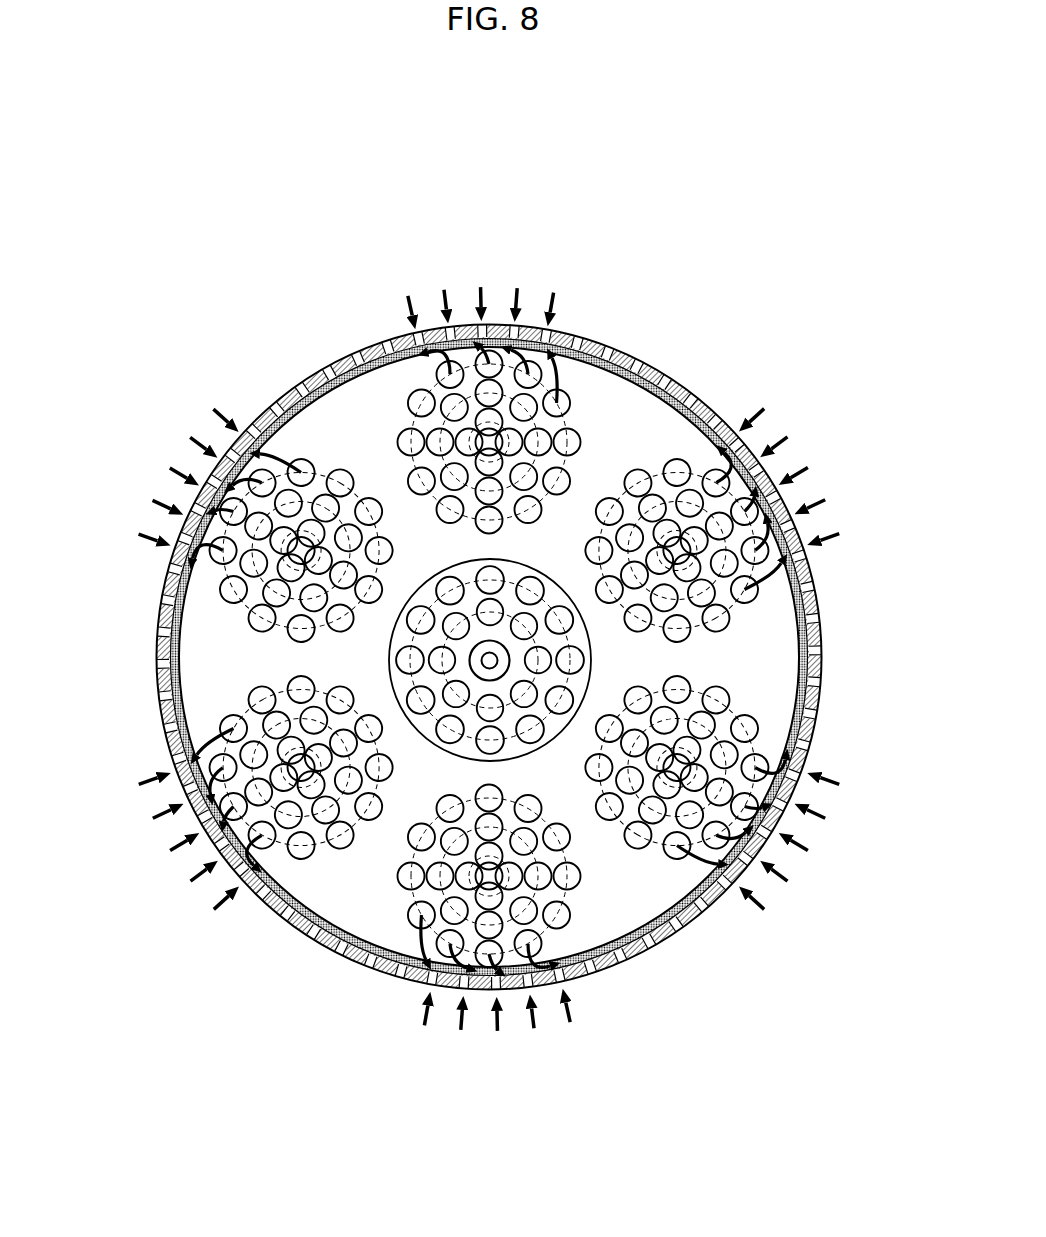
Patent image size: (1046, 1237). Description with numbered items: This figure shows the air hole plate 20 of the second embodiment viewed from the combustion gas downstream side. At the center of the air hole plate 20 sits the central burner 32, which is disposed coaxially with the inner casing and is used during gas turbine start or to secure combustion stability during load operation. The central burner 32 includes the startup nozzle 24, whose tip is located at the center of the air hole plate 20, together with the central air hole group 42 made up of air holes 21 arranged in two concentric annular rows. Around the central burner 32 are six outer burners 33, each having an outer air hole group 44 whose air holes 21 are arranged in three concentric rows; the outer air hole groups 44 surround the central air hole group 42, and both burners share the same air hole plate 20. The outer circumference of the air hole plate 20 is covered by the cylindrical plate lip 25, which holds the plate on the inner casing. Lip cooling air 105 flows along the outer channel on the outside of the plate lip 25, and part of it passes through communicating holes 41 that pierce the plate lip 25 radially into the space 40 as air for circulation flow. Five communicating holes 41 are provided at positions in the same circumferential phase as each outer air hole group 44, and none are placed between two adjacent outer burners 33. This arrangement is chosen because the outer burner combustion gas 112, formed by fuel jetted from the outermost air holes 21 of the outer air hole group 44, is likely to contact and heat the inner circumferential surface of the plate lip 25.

The air hole plate 20 is at (647, 422).
The air holes 21 is at (720, 722).
The startup nozzle 24 is at (487, 664).
The plate lip 25 is at (632, 957).
The central burner 32 is at (391, 680).
The outer burner 33 is at (824, 677).
The space 40 is at (692, 917).
The communicating hole 41 is at (176, 768).
The central air hole group 42 is at (465, 567).
The outer air hole group 44 is at (572, 420).
The lip cooling air 105 is at (238, 885).
The outer burner combustion gas 112 is at (213, 730).